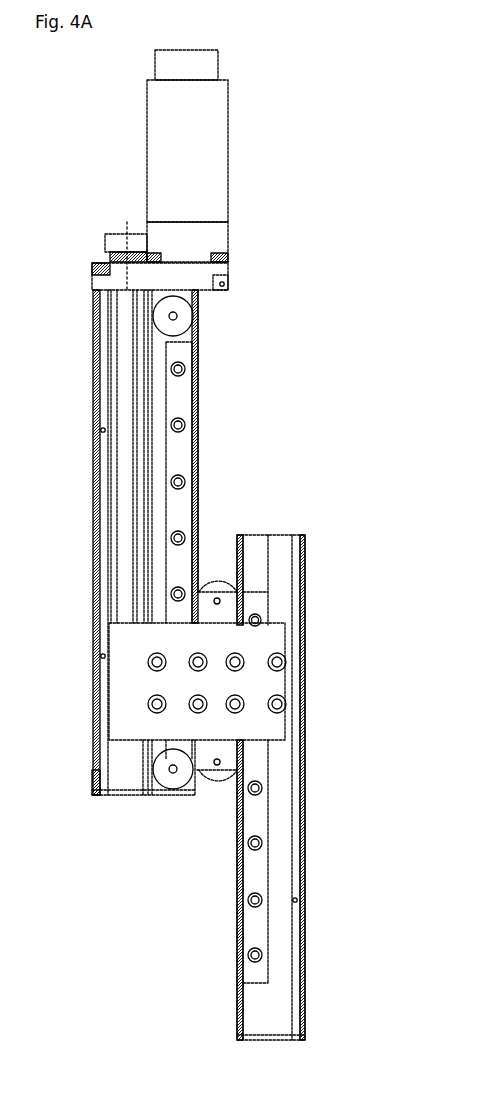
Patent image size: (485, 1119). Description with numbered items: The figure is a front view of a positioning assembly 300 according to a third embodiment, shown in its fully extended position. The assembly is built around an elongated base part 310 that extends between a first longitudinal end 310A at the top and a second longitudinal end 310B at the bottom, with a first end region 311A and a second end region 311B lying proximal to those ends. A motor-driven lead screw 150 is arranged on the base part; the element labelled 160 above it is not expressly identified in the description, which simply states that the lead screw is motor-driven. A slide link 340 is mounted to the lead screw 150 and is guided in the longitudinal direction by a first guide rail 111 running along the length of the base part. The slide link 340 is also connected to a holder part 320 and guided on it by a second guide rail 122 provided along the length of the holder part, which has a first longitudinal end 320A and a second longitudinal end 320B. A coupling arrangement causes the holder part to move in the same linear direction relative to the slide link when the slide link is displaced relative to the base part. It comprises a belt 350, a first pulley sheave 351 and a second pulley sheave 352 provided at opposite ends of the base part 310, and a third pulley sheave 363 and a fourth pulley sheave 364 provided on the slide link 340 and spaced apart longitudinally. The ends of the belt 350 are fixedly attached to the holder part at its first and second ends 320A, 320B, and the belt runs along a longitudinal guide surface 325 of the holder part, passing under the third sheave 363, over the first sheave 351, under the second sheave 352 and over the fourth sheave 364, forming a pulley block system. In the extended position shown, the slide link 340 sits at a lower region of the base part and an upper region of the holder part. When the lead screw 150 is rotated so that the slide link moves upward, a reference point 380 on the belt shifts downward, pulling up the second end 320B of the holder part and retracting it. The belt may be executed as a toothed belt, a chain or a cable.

The positioning assembly 300 is at (297, 106).
The motor 160 is at (187, 136).
The lead screw 150 is at (119, 232).
The base part 310 is at (153, 278).
The first longitudinal end 310A is at (112, 262).
The first end region 311A is at (90, 284).
The first pulley sheave 351 is at (177, 316).
The reference point 380 is at (194, 345).
The first guide rail 111 is at (178, 462).
The third pulley sheave 363 is at (219, 590).
The first longitudinal end 320A is at (258, 536).
The longitudinal guide surface 325 is at (245, 568).
The slide link 340 is at (135, 688).
The second end region 311B is at (90, 780).
The second longitudinal end 310B is at (100, 795).
The second pulley sheave 352 is at (160, 770).
The belt 350 is at (180, 792).
The fourth pulley sheave 364 is at (218, 777).
The holder part 320 is at (278, 828).
The second guide rail 122 is at (255, 925).
The second longitudinal end 320B is at (287, 1040).